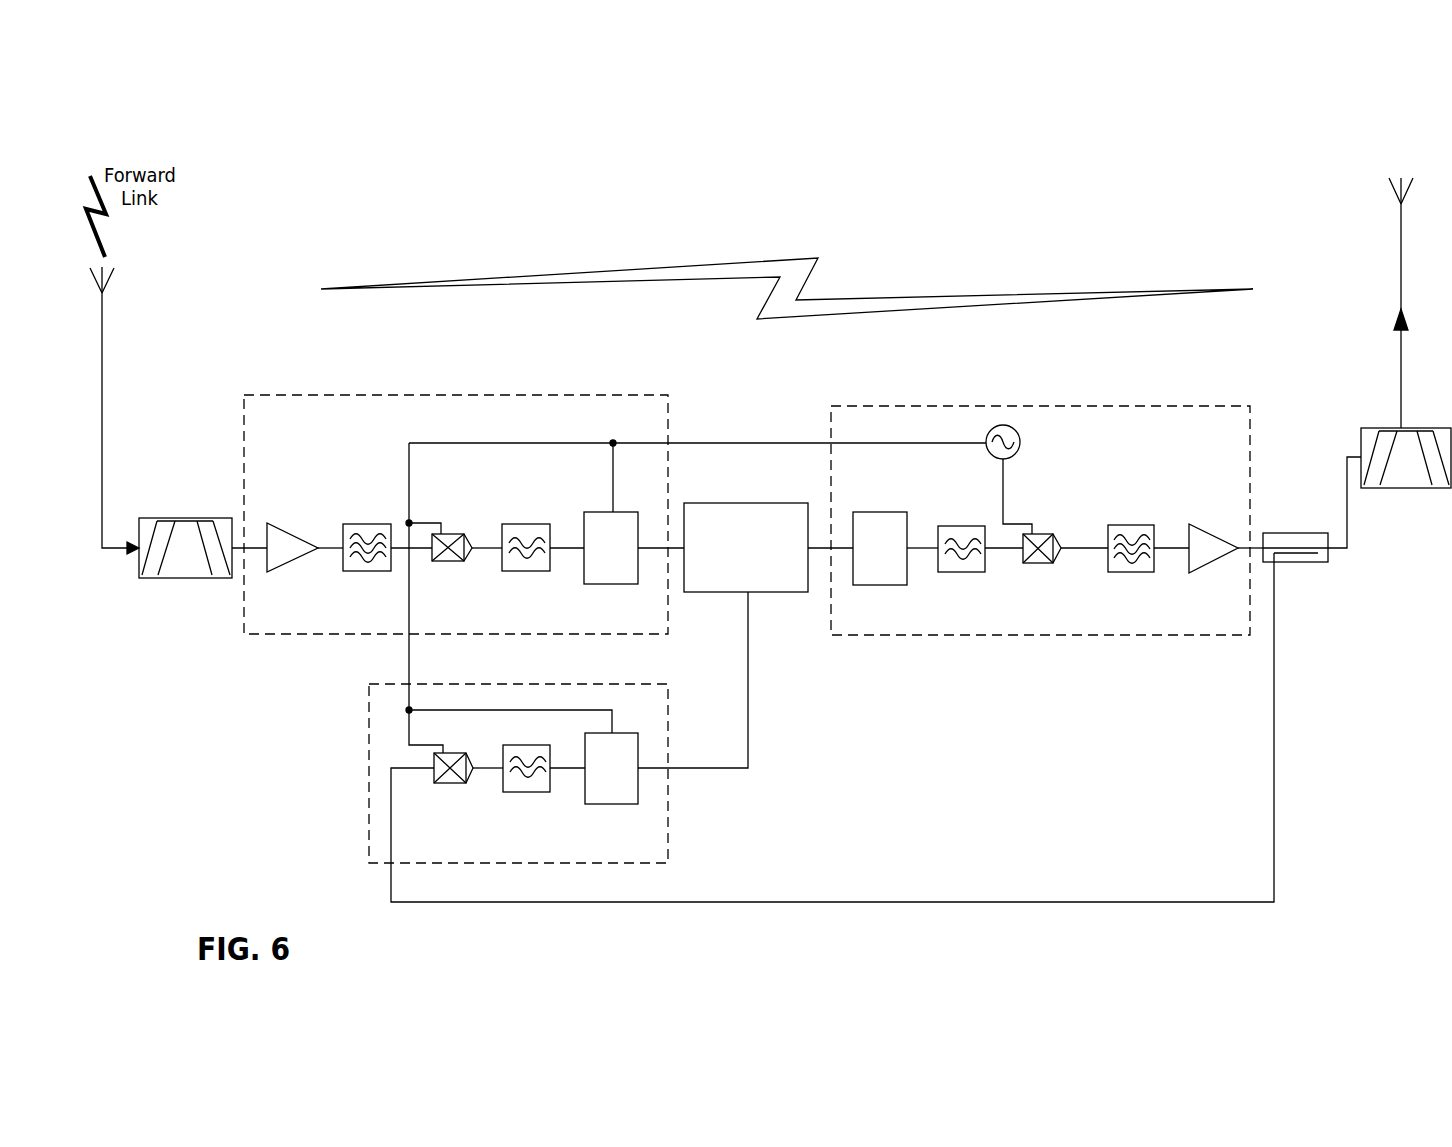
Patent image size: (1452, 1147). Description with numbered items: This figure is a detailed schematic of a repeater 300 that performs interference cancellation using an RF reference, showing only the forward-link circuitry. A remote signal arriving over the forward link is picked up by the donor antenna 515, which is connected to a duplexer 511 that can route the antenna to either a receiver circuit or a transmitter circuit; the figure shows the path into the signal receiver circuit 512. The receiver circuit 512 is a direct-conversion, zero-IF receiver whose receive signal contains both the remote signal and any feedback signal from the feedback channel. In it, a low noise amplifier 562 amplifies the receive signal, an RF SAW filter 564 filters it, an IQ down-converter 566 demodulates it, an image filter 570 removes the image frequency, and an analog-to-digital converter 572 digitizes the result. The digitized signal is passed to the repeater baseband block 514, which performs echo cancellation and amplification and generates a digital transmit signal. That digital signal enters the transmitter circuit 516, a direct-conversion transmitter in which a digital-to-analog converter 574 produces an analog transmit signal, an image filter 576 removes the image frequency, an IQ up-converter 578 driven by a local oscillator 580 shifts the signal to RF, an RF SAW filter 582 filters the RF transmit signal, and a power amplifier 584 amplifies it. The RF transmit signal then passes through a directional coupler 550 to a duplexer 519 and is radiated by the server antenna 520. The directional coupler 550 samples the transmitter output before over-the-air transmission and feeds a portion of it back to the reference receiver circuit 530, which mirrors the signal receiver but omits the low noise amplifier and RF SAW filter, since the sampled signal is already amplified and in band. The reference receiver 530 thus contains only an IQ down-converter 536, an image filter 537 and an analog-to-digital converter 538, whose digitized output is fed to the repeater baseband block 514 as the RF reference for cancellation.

The repeater system 300 is at (283, 294).
The duplexer 511 is at (150, 518).
The receiver circuit 512 is at (327, 395).
The repeater baseband block 514 is at (702, 592).
The donor antenna 515 is at (104, 355).
The transmitter circuit 516 is at (915, 406).
The duplexer 519 is at (1390, 428).
The server antenna 520 is at (1399, 247).
The reference receiver 530 is at (369, 732).
The IQ down-converter 536 is at (453, 753).
The image filter 537 is at (548, 745).
The analog-to-digital converter 538 is at (630, 733).
The directional coupler 550 is at (1292, 562).
The low noise amplifier 562 is at (300, 525).
The RF SAW filter 564 is at (363, 524).
The IQ down-converter 566 is at (457, 534).
The image filter 570 is at (525, 524).
The analog-to-digital converter 572 is at (588, 512).
The digital-to-analog converter 574 is at (878, 512).
The image filter 576 is at (962, 526).
The IQ up-converter 578 is at (1041, 534).
The local oscillator 580 is at (1020, 442).
The RF SAW filter 582 is at (1131, 525).
The power amplifier 584 is at (1212, 533).